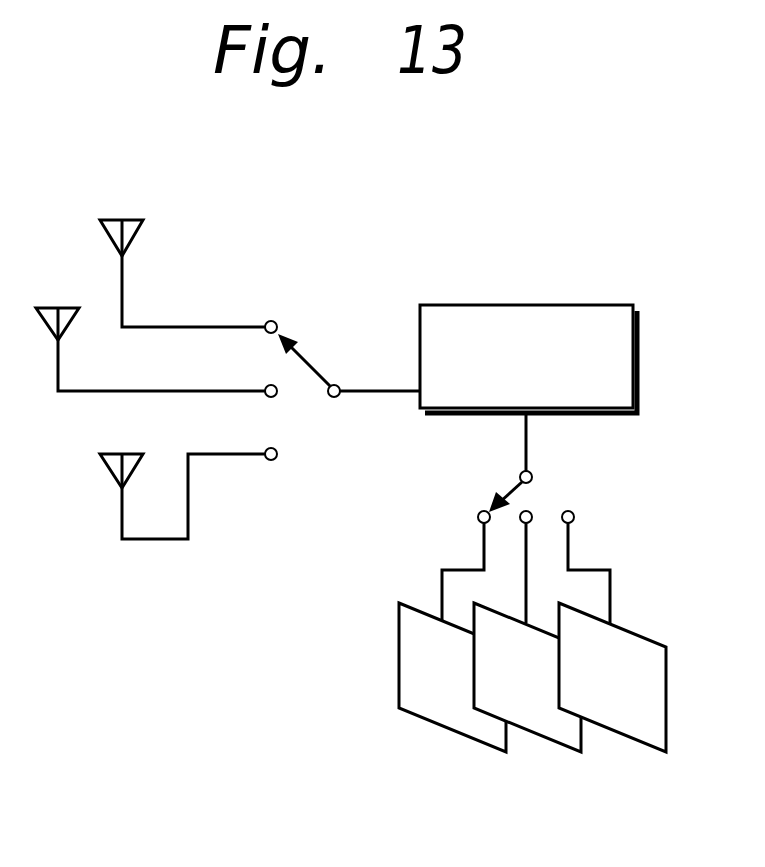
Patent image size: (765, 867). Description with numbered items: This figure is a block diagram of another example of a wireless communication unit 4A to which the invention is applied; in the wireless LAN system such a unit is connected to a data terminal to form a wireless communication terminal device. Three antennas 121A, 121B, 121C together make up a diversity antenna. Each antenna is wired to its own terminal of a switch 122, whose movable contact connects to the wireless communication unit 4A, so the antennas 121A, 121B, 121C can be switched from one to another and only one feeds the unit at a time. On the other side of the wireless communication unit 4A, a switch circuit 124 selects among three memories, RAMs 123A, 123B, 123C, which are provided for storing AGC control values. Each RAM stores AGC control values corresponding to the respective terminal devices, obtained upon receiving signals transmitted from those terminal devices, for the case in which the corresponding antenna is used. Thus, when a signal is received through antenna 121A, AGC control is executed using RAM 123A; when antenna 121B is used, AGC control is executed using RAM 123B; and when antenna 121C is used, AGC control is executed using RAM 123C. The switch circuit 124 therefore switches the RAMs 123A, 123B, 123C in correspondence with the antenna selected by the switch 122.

The antenna 121A is at (120, 219).
The antenna 121B is at (58, 307).
The antenna 121C is at (122, 454).
The switch 122 is at (313, 353).
The wireless communication unit 4A is at (527, 304).
The switch circuit 124 is at (547, 498).
The RAM 123A is at (441, 712).
The RAM 123B is at (550, 720).
The RAM 123C is at (632, 730).